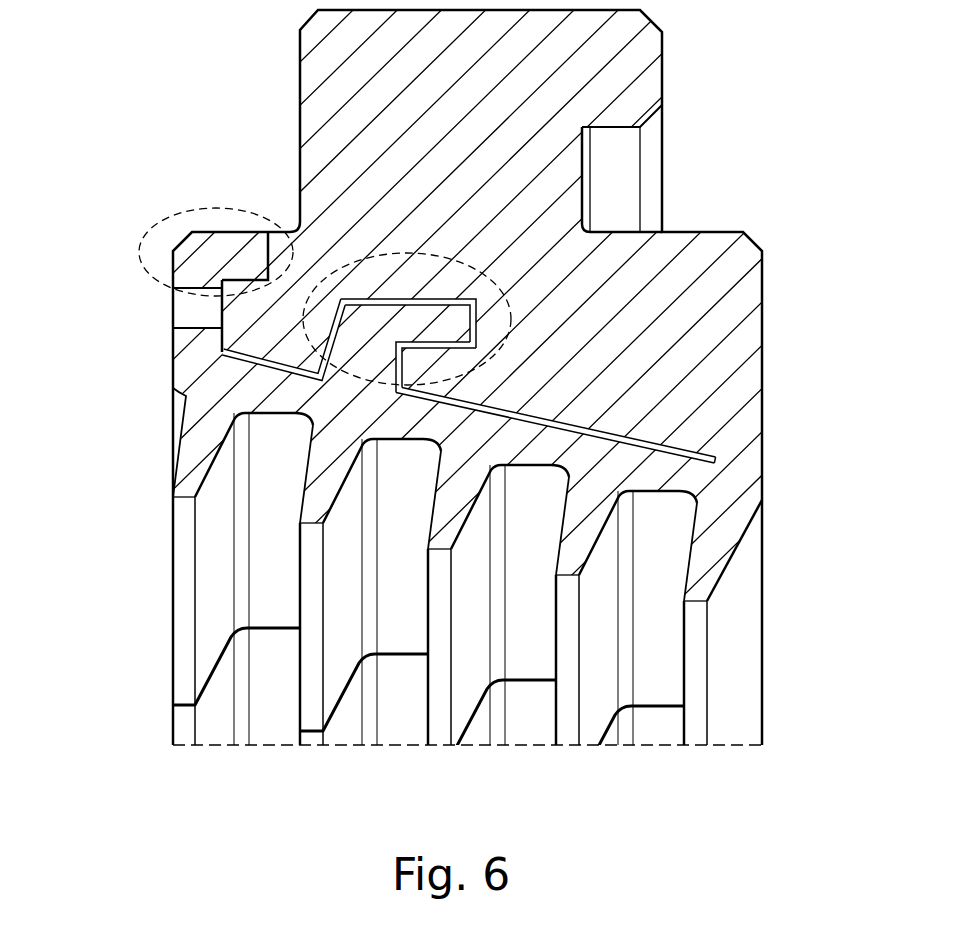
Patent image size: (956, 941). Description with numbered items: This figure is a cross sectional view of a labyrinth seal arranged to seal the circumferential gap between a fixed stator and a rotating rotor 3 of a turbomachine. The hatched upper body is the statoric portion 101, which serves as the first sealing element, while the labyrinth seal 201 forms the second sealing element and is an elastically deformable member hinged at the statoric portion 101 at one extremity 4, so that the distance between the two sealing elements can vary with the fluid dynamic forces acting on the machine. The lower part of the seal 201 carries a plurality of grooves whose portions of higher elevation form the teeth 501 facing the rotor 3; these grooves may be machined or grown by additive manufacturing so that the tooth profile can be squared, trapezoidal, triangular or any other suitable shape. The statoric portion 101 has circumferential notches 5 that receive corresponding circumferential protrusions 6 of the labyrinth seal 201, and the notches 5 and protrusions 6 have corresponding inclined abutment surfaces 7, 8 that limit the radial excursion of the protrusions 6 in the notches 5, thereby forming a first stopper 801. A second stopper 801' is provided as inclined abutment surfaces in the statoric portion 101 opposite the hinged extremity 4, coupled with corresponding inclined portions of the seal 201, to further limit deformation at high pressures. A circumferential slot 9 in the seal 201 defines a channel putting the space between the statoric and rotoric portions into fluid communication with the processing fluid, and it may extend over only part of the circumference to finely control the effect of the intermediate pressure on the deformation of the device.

The rotating rotor 3 is at (737, 637).
The hinged extremity 4 is at (718, 458).
The circumferential notches 5 is at (358, 300).
The circumferential protrusions 6 is at (416, 327).
The inclined abutment surface 7 is at (418, 350).
The inclined abutment surface 8 is at (473, 394).
The circumferential slot 9 is at (197, 307).
The statoric portion 101 is at (680, 275).
The labyrinth seal 201 is at (200, 363).
The teeth 501 is at (193, 468).
The first stopper 801 is at (334, 251).
The second stopper 801' is at (180, 224).